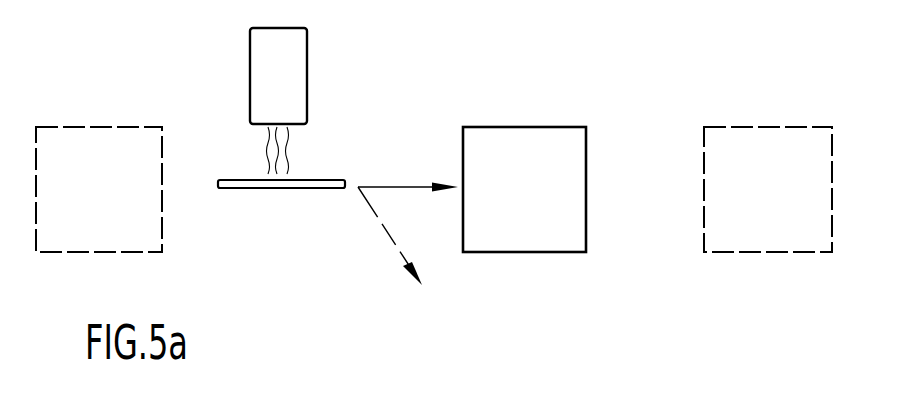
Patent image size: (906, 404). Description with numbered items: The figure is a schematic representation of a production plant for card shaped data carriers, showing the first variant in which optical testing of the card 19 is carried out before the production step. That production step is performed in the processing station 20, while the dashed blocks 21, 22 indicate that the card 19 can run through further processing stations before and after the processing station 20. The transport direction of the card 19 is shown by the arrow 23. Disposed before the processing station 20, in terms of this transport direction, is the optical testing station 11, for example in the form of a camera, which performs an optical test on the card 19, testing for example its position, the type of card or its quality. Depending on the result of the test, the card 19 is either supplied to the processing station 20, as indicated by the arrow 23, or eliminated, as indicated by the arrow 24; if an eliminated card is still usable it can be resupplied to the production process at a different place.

The optical testing station 11 is at (262, 69).
The card 19 is at (322, 178).
The processing station 20 is at (545, 140).
The dashed block 21 is at (87, 138).
The dashed block 22 is at (770, 148).
The arrow 23 is at (423, 178).
The arrow 24 is at (378, 213).